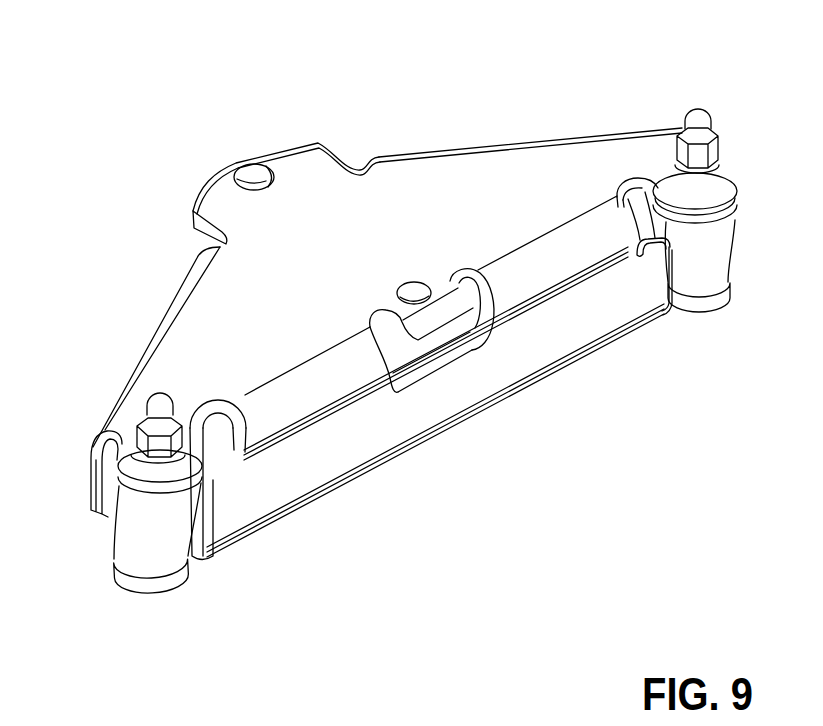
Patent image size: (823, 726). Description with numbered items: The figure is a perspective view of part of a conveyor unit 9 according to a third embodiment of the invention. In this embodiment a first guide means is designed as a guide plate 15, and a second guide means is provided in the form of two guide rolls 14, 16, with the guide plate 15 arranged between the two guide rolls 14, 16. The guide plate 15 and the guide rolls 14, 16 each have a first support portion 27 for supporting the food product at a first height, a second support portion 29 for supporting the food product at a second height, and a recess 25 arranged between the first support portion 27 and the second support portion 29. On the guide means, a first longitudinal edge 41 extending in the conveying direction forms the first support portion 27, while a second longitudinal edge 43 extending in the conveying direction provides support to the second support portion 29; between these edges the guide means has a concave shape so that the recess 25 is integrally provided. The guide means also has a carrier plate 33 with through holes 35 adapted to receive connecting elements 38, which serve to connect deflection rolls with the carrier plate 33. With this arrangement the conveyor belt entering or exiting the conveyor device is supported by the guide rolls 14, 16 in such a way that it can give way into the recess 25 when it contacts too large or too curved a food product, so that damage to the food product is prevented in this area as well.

The conveyor unit 9 is at (301, 73).
The guide roll 14 is at (118, 591).
The guide plate 15 is at (481, 139).
The guide roll 16 is at (731, 242).
The recess 25 is at (566, 327).
The first support portion 27 is at (565, 289).
The second support portion 29 is at (487, 413).
The carrier plate 33 is at (222, 337).
The through hole 35 is at (240, 174).
The connecting element 38 is at (158, 402).
The first longitudinal edge 41 is at (312, 414).
The second longitudinal edge 43 is at (350, 467).